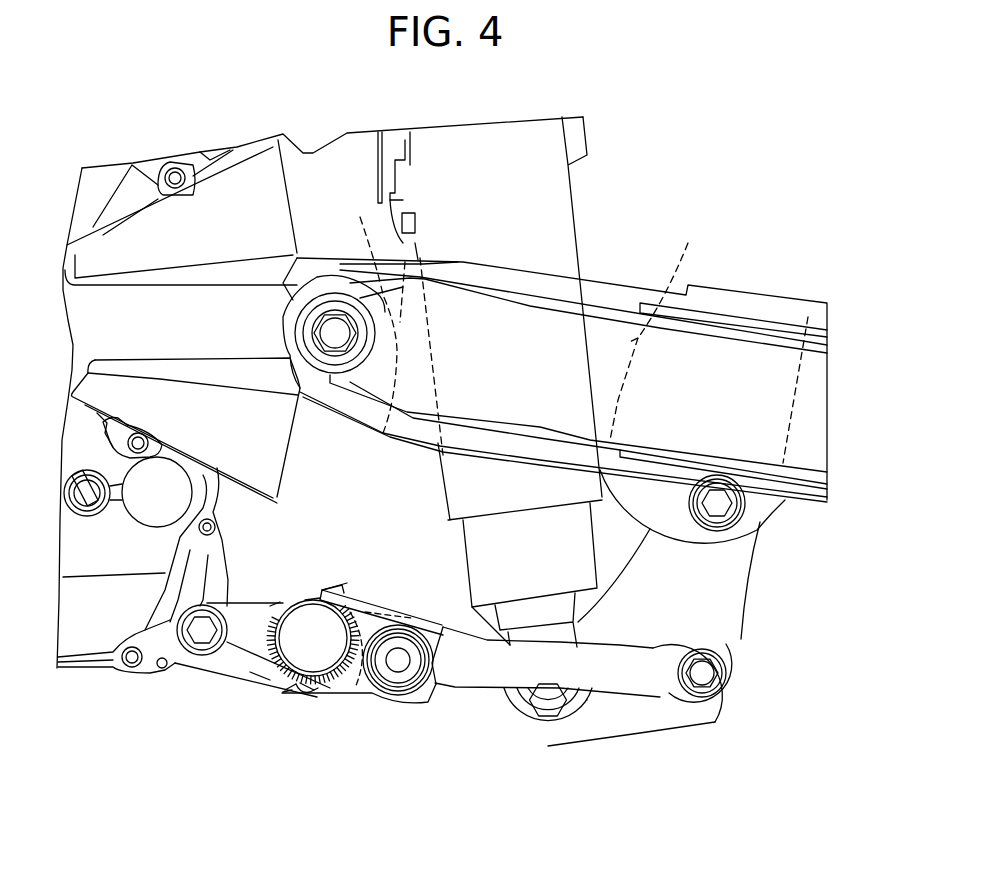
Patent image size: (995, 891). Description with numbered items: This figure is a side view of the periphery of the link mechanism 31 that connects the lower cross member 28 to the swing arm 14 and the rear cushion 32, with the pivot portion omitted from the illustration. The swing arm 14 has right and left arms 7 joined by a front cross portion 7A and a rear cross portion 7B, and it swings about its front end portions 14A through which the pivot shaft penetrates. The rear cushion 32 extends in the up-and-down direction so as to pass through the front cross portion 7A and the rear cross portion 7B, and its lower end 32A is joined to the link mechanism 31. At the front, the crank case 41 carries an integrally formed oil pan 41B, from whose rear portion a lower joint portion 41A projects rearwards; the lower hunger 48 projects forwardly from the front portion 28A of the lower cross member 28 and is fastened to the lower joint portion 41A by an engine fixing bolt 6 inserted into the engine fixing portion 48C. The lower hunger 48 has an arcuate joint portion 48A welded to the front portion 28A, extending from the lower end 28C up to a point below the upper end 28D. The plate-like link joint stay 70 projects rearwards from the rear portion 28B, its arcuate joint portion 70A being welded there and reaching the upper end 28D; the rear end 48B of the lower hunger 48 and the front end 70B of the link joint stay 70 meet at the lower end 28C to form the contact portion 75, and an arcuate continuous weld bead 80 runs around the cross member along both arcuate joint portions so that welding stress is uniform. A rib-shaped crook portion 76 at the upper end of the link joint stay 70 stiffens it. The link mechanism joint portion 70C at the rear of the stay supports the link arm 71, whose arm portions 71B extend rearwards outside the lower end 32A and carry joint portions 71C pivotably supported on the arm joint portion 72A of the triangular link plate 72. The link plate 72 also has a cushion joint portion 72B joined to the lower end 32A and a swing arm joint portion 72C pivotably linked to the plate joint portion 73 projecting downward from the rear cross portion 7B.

The engine fixing bolt 6 is at (167, 630).
The arm 7 is at (810, 452).
The front cross portion 7A is at (391, 327).
The rear cross portion 7B is at (709, 339).
The swing arm 14 is at (822, 509).
The front end portion 14A is at (312, 255).
The lower cross member 28 is at (299, 594).
The front portion 28A is at (264, 603).
The rear portion 28B is at (372, 612).
The lower end 28C is at (290, 688).
The upper end 28D is at (311, 595).
The link mechanism 31 is at (587, 775).
The rear cushion 32 is at (578, 212).
The lower end 32A is at (513, 730).
The crank case 41 is at (57, 676).
The lower joint portion 41A is at (160, 630).
The oil pan 41B is at (85, 637).
The lower hunger 48 is at (242, 668).
The arcuate joint portion 48A is at (268, 682).
The rear end 48B is at (288, 692).
The engine fixing portion 48C is at (200, 645).
The link joint stay 70 is at (352, 678).
The arcuate joint portion 70A is at (348, 682).
The front end 70B is at (318, 692).
The link mechanism joint portion 70C is at (399, 675).
The link arm 71 is at (468, 690).
The arm portion 71B is at (740, 628).
The joint portion 71C is at (730, 690).
The link plate 72 is at (661, 745).
The arm joint portion 72A is at (703, 692).
The cushion joint portion 72B is at (548, 718).
The swing arm joint portion 72C is at (741, 516).
The plate joint portion 73 is at (737, 530).
The contact portion 75 is at (306, 690).
The rib-shaped crook portion 76 is at (366, 605).
The arcuate continuous weld bead 80 is at (231, 603).